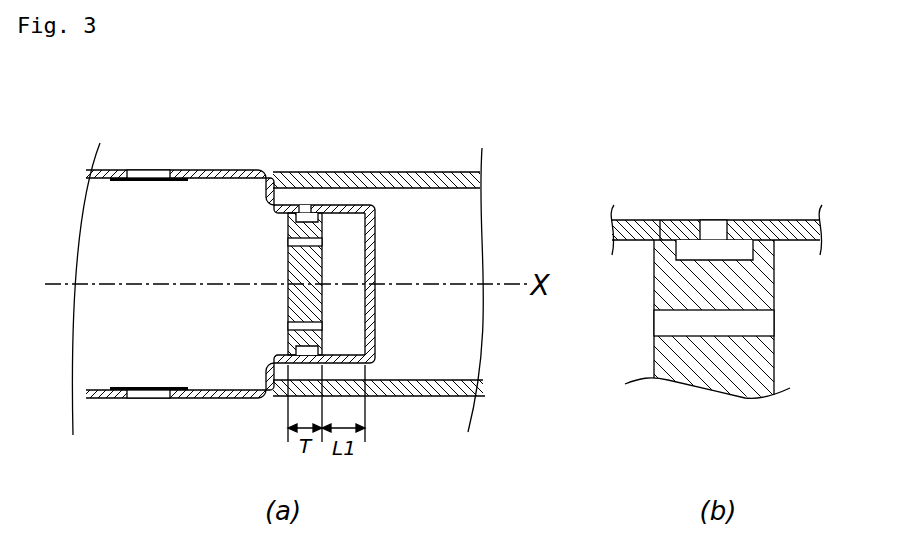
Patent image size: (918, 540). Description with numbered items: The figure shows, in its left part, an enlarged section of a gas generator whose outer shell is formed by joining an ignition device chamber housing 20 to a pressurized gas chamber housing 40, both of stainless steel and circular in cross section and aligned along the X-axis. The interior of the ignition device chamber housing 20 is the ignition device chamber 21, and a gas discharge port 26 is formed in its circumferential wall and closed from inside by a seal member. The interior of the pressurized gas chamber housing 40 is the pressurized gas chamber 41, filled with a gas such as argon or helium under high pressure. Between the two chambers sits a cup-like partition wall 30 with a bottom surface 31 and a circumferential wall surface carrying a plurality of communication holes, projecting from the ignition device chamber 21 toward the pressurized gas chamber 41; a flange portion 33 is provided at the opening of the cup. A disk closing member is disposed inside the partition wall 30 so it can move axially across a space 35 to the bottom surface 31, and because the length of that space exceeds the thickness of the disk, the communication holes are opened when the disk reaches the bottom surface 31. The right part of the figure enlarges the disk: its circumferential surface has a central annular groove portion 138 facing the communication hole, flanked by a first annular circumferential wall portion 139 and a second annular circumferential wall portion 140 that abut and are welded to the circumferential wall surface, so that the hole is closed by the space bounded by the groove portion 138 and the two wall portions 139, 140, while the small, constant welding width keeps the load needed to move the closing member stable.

The ignition device chamber housing 20 is at (206, 170).
The ignition device chamber 21 is at (159, 253).
The gas discharge port 26 is at (148, 170).
The partition wall 30 is at (342, 242).
The bottom surface 31 is at (375, 230).
The flange portion 33 is at (303, 203).
The space 35 is at (358, 268).
The pressurized gas chamber housing 40 is at (424, 172).
The pressurized gas chamber 41 is at (456, 294).
The annular groove portion 138 is at (697, 255).
The first annular circumferential wall portion 139 is at (765, 228).
The second annular circumferential wall portion 140 is at (658, 220).